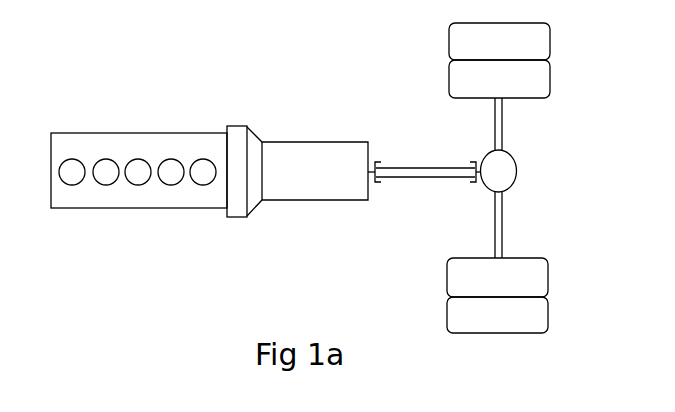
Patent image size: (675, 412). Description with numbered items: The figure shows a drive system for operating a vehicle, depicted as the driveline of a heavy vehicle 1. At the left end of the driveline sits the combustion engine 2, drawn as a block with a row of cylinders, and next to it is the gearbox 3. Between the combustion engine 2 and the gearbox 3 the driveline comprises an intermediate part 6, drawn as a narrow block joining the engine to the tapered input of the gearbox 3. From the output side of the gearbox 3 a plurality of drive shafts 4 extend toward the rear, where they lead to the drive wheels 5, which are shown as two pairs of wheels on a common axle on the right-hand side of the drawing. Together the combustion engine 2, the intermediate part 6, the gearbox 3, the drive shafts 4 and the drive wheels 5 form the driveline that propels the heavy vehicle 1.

The heavy vehicle 1 is at (176, 93).
The combustion engine 2 is at (122, 197).
The gearbox 3 is at (325, 180).
The drive shafts 4 is at (420, 170).
The drive wheels 5 is at (532, 77).
The intermediate part 6 is at (238, 162).